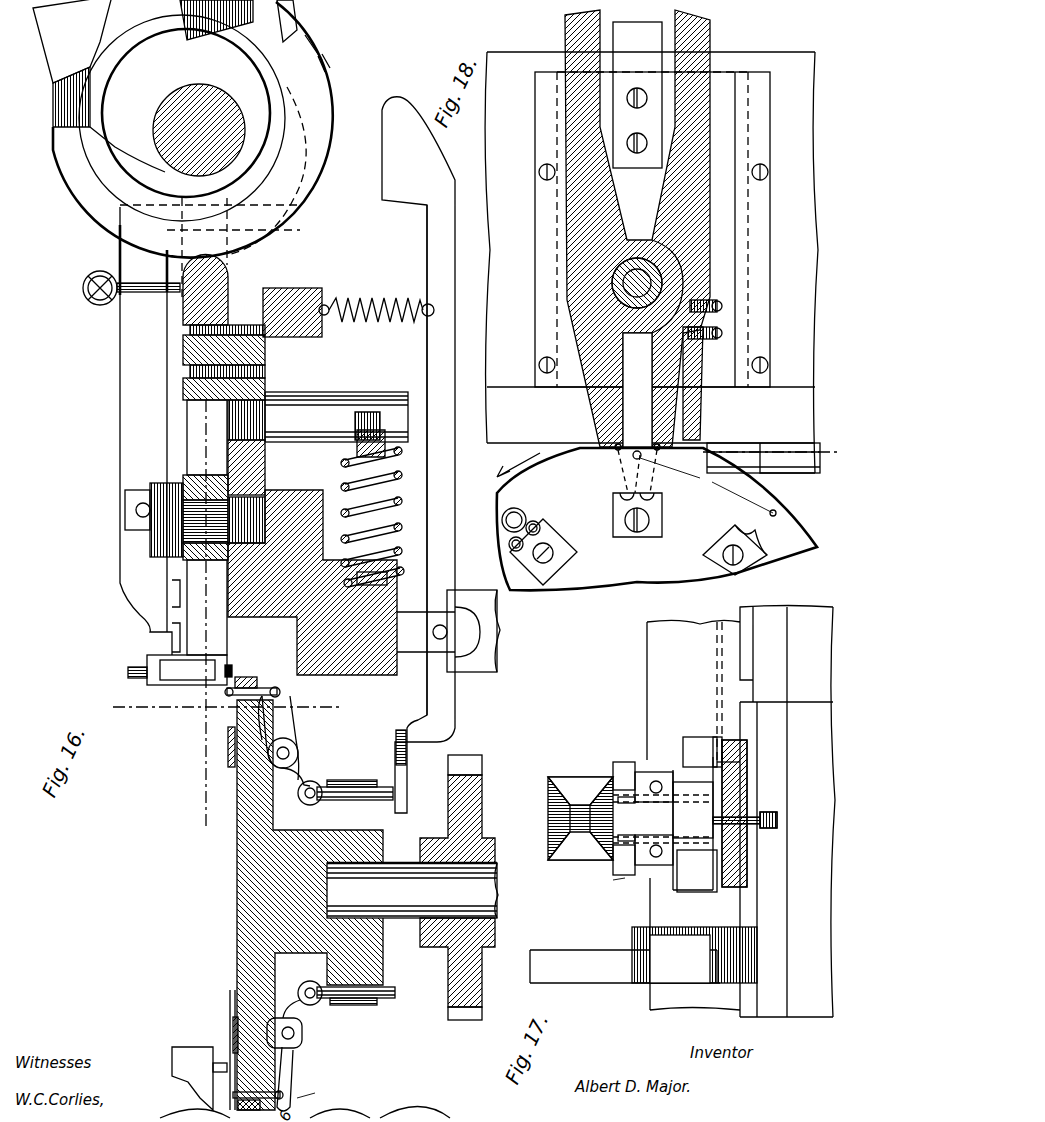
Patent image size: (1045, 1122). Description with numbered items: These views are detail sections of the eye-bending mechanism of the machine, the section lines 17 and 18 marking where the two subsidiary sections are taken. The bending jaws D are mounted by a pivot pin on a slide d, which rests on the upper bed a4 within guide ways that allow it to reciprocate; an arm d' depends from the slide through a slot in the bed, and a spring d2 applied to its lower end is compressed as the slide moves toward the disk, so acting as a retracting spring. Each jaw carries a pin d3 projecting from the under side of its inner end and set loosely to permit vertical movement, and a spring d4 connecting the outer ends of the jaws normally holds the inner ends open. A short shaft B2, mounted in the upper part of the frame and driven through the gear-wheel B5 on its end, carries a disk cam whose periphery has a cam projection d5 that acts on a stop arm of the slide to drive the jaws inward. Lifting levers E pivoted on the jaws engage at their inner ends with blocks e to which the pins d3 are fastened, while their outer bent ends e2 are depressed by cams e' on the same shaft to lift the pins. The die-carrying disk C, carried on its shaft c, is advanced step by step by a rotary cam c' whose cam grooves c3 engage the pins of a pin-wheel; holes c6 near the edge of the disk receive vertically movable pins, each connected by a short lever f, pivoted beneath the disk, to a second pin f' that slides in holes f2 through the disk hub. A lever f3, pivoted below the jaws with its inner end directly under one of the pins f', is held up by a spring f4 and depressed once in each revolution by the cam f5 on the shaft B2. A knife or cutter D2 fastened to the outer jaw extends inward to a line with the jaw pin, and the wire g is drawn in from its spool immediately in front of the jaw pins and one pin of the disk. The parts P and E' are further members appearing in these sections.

In FIG. 16, the arm or cam f5 is at (55, 50).
In FIG. 17, the arm or cam f5 is at (694, 955).
In FIG. 16, the cam projection d5 is at (62, 160).
In FIG. 16, the outer bent ends e2 is at (312, 170).
In FIG. 16, the cams e' is at (186, 113).
In FIG. 16, the gear-wheel B5 is at (199, 130).
In FIG. 16, the blocks e is at (221, 349).
In FIG. 17, the blocks e is at (643, 793).
In FIG. 16, the spring d4 is at (92, 278).
In FIG. 16, the slide d is at (175, 375).
In FIG. 18, the slide d is at (611, 230).
In FIG. 16, the section line 18 is at (252, 541).
In FIG. 16, the holes f2 is at (382, 293).
In FIG. 16, the lever f3 is at (395, 150).
In FIG. 16, the arm d' is at (336, 417).
In FIG. 18, the arm d' is at (637, 95).
In FIG. 16, the spring d2 is at (392, 470).
In FIG. 16, the lifting levers E is at (130, 431).
In FIG. 16, the bending jaws D is at (188, 473).
In FIG. 18, the bending jaws D is at (609, 277).
In FIG. 17, the bending jaws D is at (690, 785).
In FIG. 16, the pins d3 is at (134, 670).
In FIG. 17, the pins d3 is at (622, 797).
In FIG. 16, the section line 17 is at (227, 715).
In FIG. 16, the holes c6 is at (232, 668).
In FIG. 16, the spring f4 is at (250, 678).
In FIG. 16, the short levers f is at (276, 899).
In FIG. 17, the short levers f is at (762, 833).
In FIG. 16, the second pin f' is at (314, 927).
In FIG. 17, the second pin f' is at (781, 815).
In FIG. 16, the rotary cam c' is at (215, 918).
In FIG. 18, the rotary cam c' is at (617, 529).
In FIG. 16, the die carrying disk C is at (245, 915).
In FIG. 18, the die carrying disk C is at (657, 519).
In FIG. 17, the die carrying disk C is at (735, 853).
In FIG. 16, the shaft c is at (412, 890).
In FIG. 16, the cam grooves c3 is at (457, 887).
In FIG. 16, the support P is at (192, 1060).
In FIG. 16, the frame piece E' is at (309, 1100).
In FIG. 18, the frame piece E' is at (708, 487).
In FIG. 17, the frame piece E' is at (608, 884).
In FIG. 18, the upper bed a4 is at (651, 262).
In FIG. 18, the knife or cutter D2 is at (700, 392).
In FIG. 18, the wire g is at (783, 452).
In FIG. 17, the wire g is at (724, 712).
In FIG. 17, the short shaft B2 is at (682, 812).